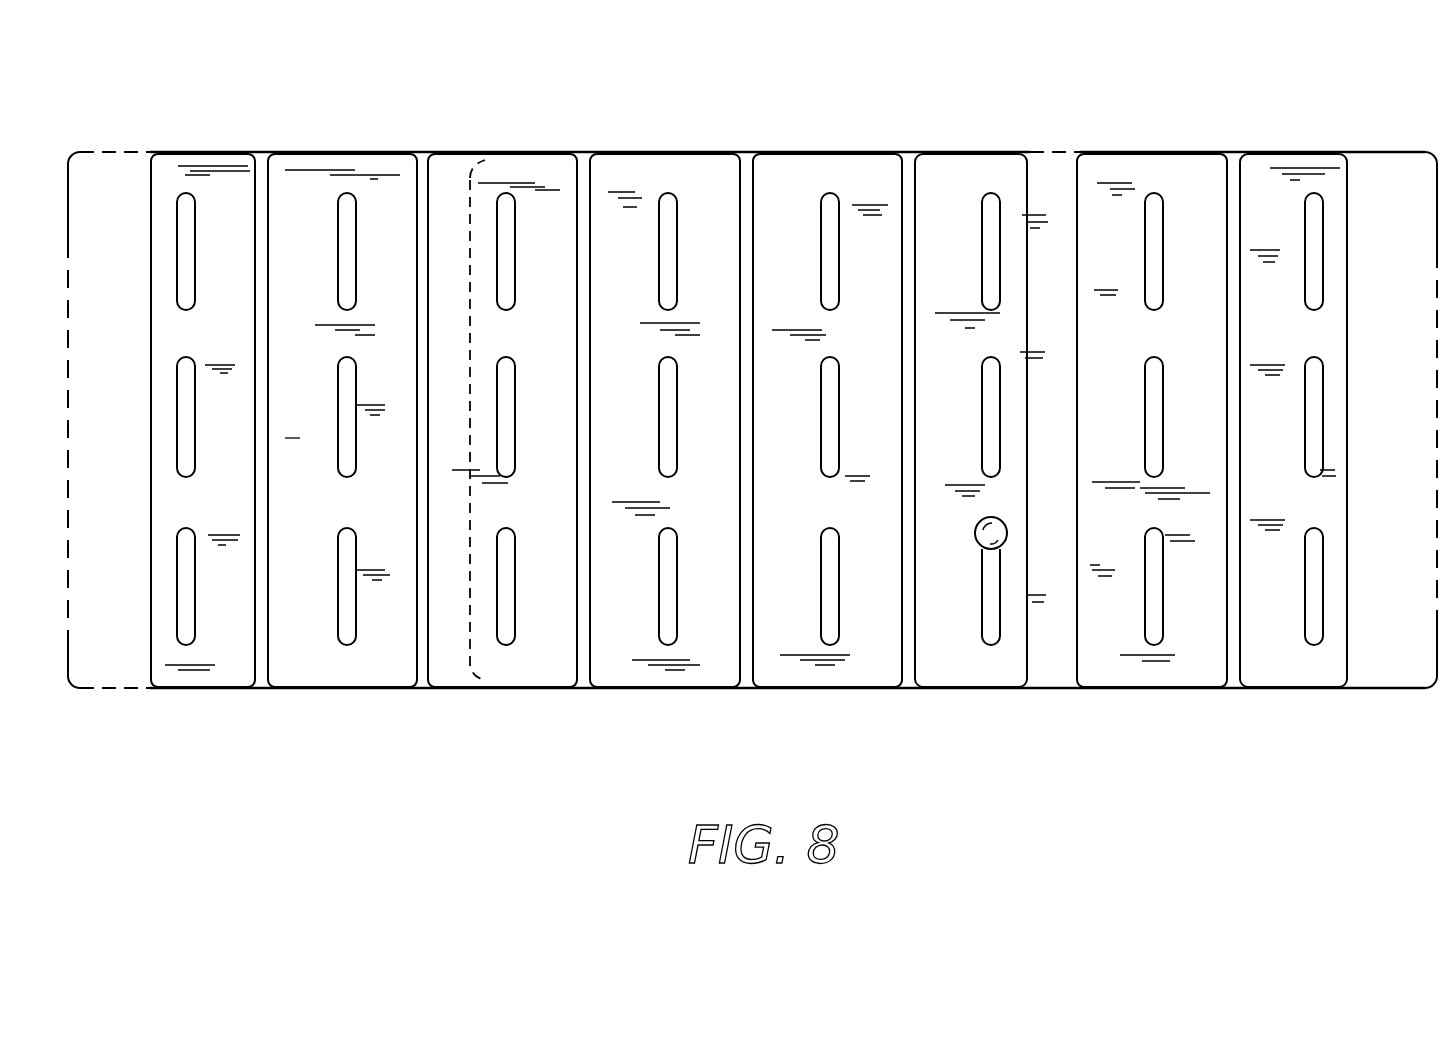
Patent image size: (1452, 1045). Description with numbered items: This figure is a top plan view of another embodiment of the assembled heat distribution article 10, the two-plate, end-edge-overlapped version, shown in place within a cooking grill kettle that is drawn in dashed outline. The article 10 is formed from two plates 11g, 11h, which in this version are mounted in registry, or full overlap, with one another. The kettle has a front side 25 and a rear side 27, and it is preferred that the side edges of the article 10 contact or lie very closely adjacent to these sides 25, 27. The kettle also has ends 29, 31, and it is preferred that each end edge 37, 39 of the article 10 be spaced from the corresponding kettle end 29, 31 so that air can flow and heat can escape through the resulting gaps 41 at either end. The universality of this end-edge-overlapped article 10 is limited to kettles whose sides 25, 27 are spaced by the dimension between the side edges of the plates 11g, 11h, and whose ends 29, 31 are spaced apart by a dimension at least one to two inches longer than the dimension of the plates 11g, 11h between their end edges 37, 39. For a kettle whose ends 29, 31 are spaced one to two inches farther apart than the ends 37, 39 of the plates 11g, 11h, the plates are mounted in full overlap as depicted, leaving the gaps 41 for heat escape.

The heat distribution article 10 is at (360, 118).
The kettle front side 25 is at (140, 152).
The kettle rear side 27 is at (145, 688).
The kettle end 29 is at (71, 250).
The kettle end 31 is at (1437, 248).
The end edge 37 is at (151, 405).
The end edge 39 is at (1030, 208).
The gap 41 is at (103, 648).
The plate 11g is at (402, 658).
The plate 11h is at (1178, 665).